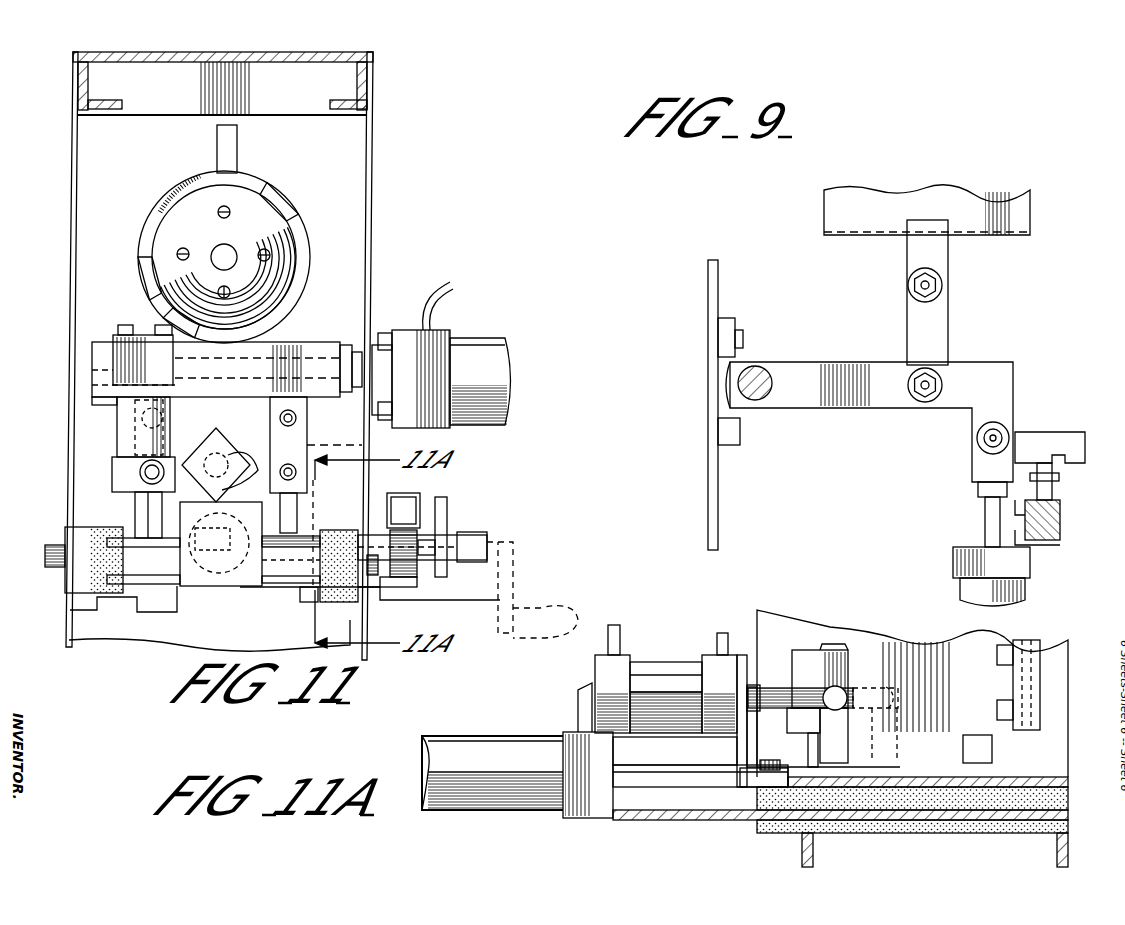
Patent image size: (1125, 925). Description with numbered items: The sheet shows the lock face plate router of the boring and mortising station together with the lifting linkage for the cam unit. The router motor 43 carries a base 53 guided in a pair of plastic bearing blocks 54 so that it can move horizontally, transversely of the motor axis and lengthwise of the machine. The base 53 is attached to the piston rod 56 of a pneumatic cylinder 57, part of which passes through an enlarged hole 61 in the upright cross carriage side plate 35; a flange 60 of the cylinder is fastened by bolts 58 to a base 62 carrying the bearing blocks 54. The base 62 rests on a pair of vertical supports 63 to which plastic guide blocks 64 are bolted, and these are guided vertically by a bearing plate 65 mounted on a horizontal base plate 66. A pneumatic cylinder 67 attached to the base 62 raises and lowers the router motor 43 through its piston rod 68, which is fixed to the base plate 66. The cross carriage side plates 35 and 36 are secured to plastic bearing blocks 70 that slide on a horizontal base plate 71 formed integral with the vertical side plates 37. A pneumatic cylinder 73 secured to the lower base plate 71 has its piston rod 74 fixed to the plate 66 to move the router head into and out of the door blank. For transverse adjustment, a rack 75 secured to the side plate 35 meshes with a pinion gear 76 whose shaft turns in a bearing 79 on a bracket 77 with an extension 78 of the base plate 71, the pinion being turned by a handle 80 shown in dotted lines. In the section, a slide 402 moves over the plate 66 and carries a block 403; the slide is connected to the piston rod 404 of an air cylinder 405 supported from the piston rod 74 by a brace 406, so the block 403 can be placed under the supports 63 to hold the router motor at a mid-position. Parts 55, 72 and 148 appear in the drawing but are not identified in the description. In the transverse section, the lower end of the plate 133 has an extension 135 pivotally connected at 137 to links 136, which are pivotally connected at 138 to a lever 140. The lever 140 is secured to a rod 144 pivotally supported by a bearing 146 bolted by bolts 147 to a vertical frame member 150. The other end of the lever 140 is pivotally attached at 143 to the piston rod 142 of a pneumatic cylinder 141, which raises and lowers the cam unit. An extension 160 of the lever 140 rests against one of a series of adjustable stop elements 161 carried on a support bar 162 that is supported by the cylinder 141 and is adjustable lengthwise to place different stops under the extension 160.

In FIG. 11, the cross carriage side plate 35 is at (372, 182).
In FIG. 11, the cross carriage side plate 36 is at (73, 245).
In FIG. 11A, the cross carriage side plate 36 is at (865, 640).
In FIG. 11, the vertical side plate 37 is at (140, 650).
In FIG. 11A, the vertical side plate 37 is at (802, 856).
In FIG. 11, the router motor 43 is at (262, 190).
In FIG. 11, the base 53 is at (308, 340).
In FIG. 11, the plastic bearing blocks 54 is at (113, 352).
In FIG. 11, the shaft 55 is at (92, 366).
In FIG. 11, the piston rod 56 is at (315, 398).
In FIG. 11, the pneumatic cylinder 57 is at (487, 345).
In FIG. 11, the bolts 58 is at (358, 365).
In FIG. 11, the flange 60 is at (344, 345).
In FIG. 11, the enlarged hole 61 is at (365, 345).
In FIG. 11, the base 62 is at (92, 401).
In FIG. 11, the vertical supports 63 is at (190, 432).
In FIG. 11A, the vertical supports 63 is at (1013, 660).
In FIG. 11, the plastic guide blocks 64 is at (362, 445).
In FIG. 11, the bearing plate 65 is at (297, 513).
In FIG. 11, the horizontal base plate 66 is at (158, 586).
In FIG. 11A, the horizontal base plate 66 is at (1000, 833).
In FIG. 11, the pneumatic cylinder 67 is at (117, 440).
In FIG. 11, the piston rod 68 is at (135, 500).
In FIG. 11, the plastic bearing blocks 70 is at (348, 530).
In FIG. 11, the horizontal base plate 71 is at (292, 600).
In FIG. 11A, the horizontal base plate 71 is at (948, 830).
In FIG. 11, the end bearing block 72 is at (60, 545).
In FIG. 11, the pneumatic cylinder 73 is at (255, 586).
In FIG. 11A, the pneumatic cylinder 73 is at (530, 740).
In FIG. 11, the piston rod 74 is at (262, 562).
In FIG. 11A, the piston rod 74 is at (700, 790).
In FIG. 11, the rack 75 is at (410, 497).
In FIG. 11, the pinion gear 76 is at (414, 577).
In FIG. 11, the bracket 77 is at (404, 589).
In FIG. 11, the extension 78 is at (372, 602).
In FIG. 11, the bearing 79 is at (468, 532).
In FIG. 11, the handle 80 is at (555, 605).
In FIG. 9, the plate 133 is at (970, 238).
In FIG. 9, the extension 135 is at (907, 252).
In FIG. 9, the links 136 is at (907, 323).
In FIG. 9, the pivotal connection 137 is at (908, 287).
In FIG. 9, the pivotal connection 138 is at (918, 404).
In FIG. 9, the lever 140 is at (985, 362).
In FIG. 9, the pneumatic cylinder 141 is at (958, 582).
In FIG. 9, the piston rod 142 is at (985, 517).
In FIG. 9, the pivotal attachment 143 is at (1010, 430).
In FIG. 9, the rod 144 is at (763, 368).
In FIG. 9, the bearing 146 is at (738, 363).
In FIG. 9, the bolts 147 is at (742, 335).
In FIG. 9, the stop block 148 is at (742, 431).
In FIG. 9, the vertical frame member 150 is at (718, 490).
In FIG. 9, the extension 160 is at (1060, 459).
In FIG. 9, the adjustable stop elements 161 is at (1052, 486).
In FIG. 9, the support bar 162 is at (1050, 542).
In FIG. 11A, the slide 402 is at (912, 822).
In FIG. 11A, the spacer block 403 is at (978, 735).
In FIG. 11A, the piston rod 404 is at (772, 688).
In FIG. 11A, the air cylinder 405 is at (680, 675).
In FIG. 11A, the brace 406 is at (735, 745).